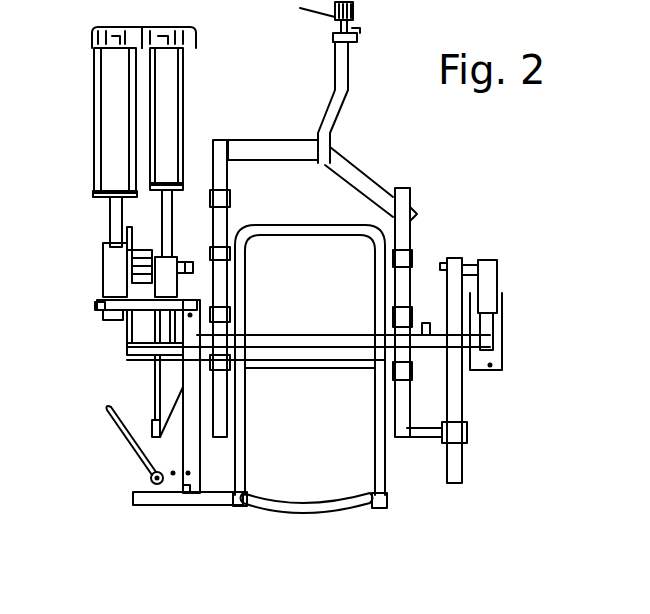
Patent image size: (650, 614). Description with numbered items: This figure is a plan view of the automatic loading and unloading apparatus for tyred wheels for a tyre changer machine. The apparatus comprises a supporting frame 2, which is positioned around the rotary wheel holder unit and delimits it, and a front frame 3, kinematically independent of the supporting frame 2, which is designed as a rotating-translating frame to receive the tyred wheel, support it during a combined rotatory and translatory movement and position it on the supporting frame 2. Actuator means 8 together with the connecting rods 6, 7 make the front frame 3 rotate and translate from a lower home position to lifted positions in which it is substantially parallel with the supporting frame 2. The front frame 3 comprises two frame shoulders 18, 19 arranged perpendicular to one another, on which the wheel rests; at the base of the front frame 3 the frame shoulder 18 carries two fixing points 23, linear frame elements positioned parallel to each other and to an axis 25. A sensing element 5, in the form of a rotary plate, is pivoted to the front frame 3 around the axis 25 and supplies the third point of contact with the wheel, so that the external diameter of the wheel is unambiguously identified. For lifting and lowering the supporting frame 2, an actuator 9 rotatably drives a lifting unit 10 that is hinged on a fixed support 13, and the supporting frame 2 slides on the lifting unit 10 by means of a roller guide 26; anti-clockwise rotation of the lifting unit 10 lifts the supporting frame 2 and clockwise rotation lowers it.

The supporting frame 2 is at (222, 225).
The front frame 3 is at (385, 448).
The sensing element 5 is at (117, 440).
The connecting rod 6 is at (104, 294).
The connecting rod 7 is at (130, 345).
The actuator means 8 is at (97, 107).
The actuator 9 is at (153, 142).
The lifting unit 10 is at (342, 333).
The fixed support 13 is at (127, 240).
The frame shoulder 18 is at (333, 502).
The frame shoulder 19 is at (312, 232).
The fixing points 23 is at (247, 507).
The axis 25 is at (157, 486).
The roller guide 26 is at (157, 425).